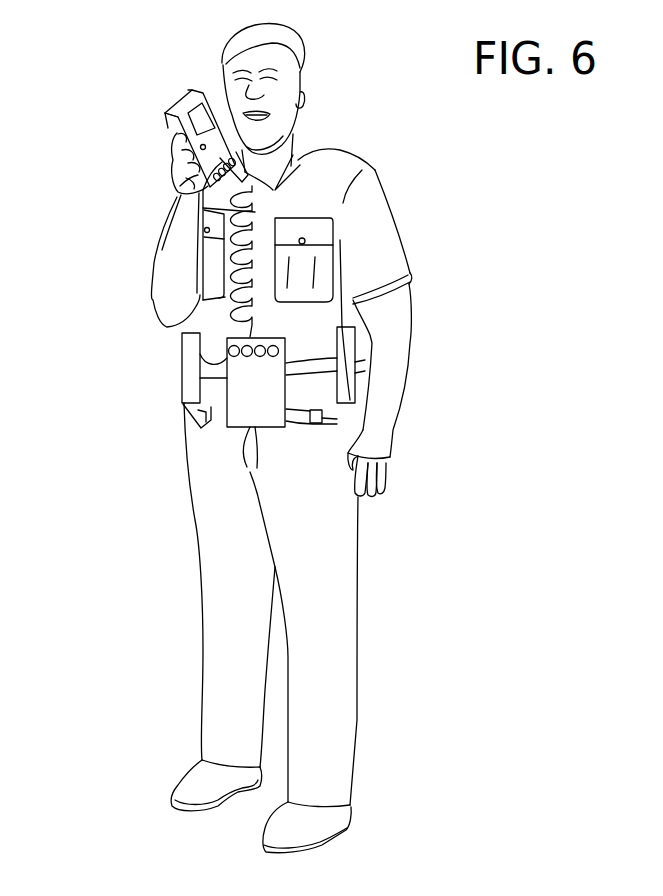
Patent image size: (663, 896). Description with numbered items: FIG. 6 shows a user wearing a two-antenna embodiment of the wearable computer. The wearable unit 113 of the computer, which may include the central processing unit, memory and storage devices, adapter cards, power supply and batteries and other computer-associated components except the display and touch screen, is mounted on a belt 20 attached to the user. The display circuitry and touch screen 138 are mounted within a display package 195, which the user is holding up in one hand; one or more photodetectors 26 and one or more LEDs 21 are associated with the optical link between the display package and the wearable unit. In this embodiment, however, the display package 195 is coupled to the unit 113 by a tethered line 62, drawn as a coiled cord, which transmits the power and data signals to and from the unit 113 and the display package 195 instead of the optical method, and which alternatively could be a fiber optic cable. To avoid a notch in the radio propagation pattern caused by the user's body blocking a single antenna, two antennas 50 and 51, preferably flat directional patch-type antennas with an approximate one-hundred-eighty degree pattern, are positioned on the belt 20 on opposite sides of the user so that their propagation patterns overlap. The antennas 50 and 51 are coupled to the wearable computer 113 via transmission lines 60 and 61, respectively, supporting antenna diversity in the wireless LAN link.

The touch screen 138 is at (188, 90).
The display package 195 is at (177, 103).
The photodetectors 26 is at (177, 168).
The tethered line 62 is at (257, 212).
The LEDs 21 is at (227, 345).
The antenna 50 is at (182, 367).
The antenna 51 is at (345, 343).
The belt 20 is at (300, 370).
The transmission line 60 is at (192, 418).
The transmission line 61 is at (335, 418).
The wearable unit 113 is at (240, 413).